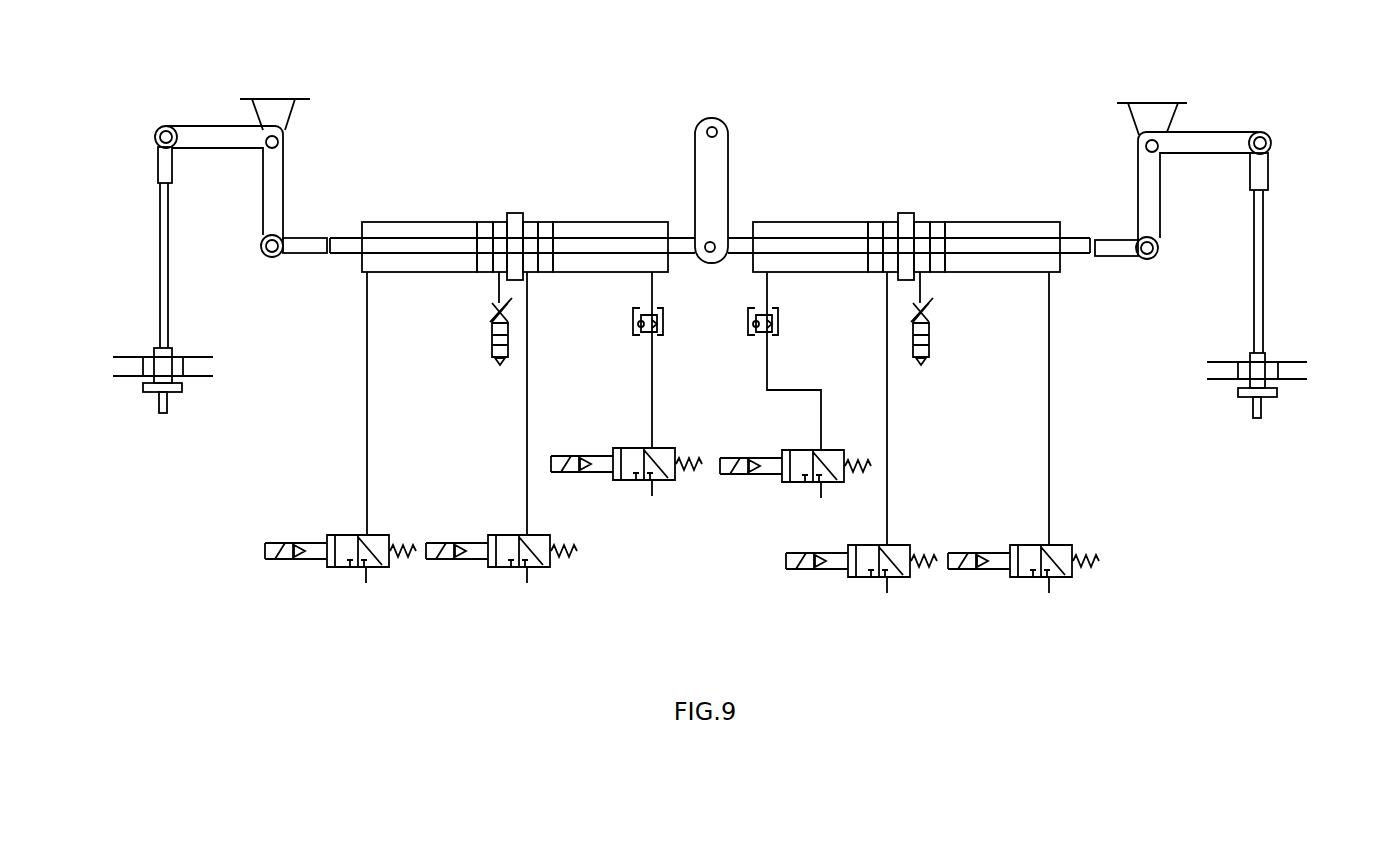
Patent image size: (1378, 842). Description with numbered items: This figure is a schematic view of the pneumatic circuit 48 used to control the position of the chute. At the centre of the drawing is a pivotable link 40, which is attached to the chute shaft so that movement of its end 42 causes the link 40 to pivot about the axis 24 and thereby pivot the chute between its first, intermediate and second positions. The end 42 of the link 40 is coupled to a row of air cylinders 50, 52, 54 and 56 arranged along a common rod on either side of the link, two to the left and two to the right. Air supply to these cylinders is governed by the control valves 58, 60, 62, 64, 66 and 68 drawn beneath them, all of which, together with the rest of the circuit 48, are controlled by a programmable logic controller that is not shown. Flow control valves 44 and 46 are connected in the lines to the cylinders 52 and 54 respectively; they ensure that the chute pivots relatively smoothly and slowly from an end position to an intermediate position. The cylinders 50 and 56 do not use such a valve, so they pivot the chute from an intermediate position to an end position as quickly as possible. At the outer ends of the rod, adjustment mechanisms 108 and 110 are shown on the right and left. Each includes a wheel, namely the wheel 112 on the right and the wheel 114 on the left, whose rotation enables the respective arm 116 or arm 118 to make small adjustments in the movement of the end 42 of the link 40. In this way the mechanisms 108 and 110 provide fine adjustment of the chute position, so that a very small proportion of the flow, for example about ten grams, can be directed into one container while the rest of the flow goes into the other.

The axis 24 is at (710, 127).
The pivotable link 40 is at (717, 162).
The end of link 42 is at (708, 243).
The flow control valve 44 is at (635, 335).
The flow control valve 46 is at (750, 335).
The pneumatic circuit 48 is at (620, 457).
The air cylinder 50 is at (392, 228).
The air cylinder 52 is at (607, 228).
The air cylinder 54 is at (817, 228).
The air cylinder 56 is at (1025, 228).
The control valve 58 is at (343, 567).
The control valve 60 is at (508, 567).
The control valve 62 is at (637, 480).
The control valve 64 is at (782, 482).
The control valve 66 is at (863, 577).
The control valve 68 is at (1027, 577).
The adjustment mechanism 108 is at (1271, 316).
The adjustment mechanism 110 is at (158, 313).
The wheel 112 is at (1247, 397).
The wheel 114 is at (168, 392).
The arm 116 is at (1213, 140).
The arm 118 is at (198, 133).